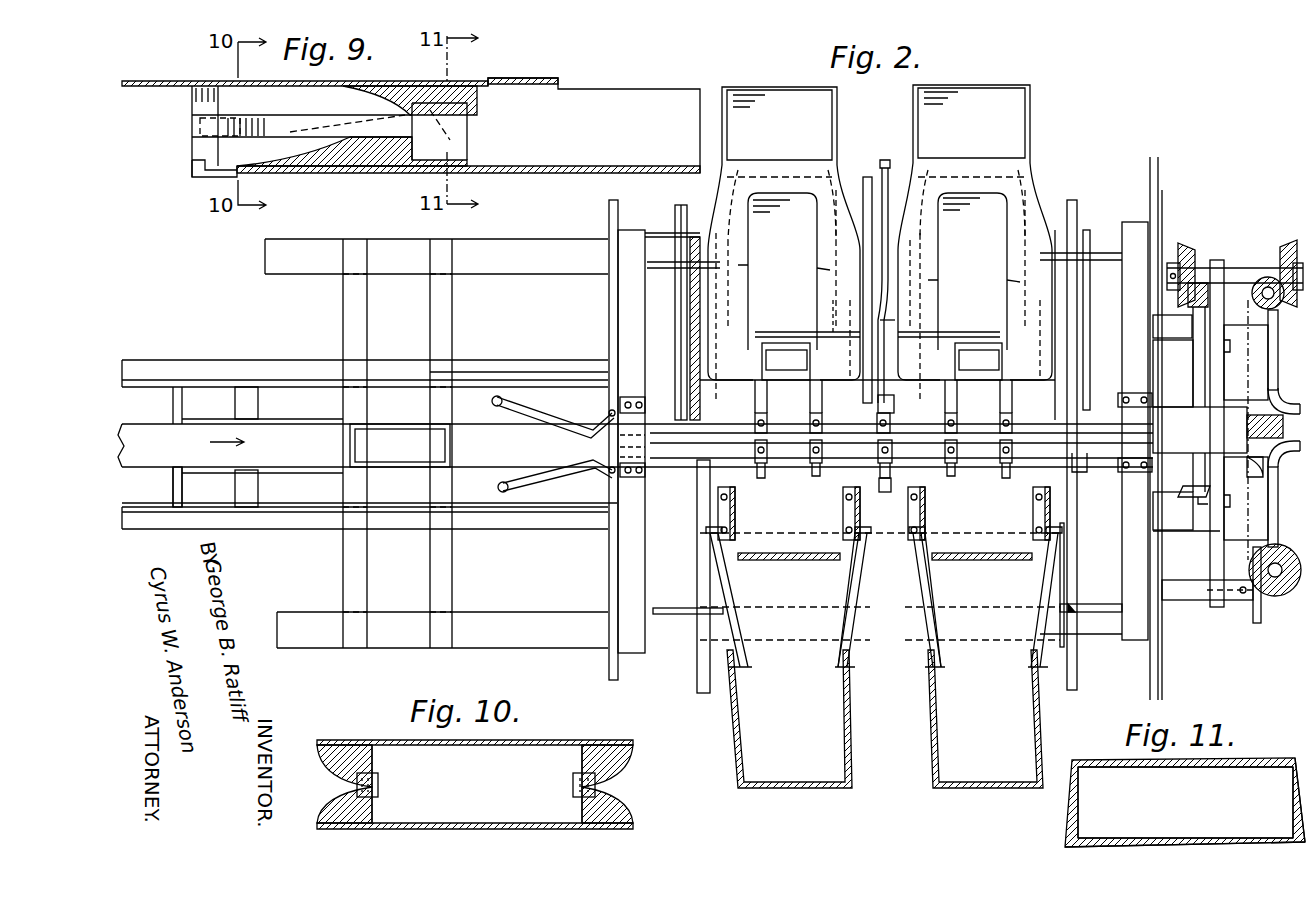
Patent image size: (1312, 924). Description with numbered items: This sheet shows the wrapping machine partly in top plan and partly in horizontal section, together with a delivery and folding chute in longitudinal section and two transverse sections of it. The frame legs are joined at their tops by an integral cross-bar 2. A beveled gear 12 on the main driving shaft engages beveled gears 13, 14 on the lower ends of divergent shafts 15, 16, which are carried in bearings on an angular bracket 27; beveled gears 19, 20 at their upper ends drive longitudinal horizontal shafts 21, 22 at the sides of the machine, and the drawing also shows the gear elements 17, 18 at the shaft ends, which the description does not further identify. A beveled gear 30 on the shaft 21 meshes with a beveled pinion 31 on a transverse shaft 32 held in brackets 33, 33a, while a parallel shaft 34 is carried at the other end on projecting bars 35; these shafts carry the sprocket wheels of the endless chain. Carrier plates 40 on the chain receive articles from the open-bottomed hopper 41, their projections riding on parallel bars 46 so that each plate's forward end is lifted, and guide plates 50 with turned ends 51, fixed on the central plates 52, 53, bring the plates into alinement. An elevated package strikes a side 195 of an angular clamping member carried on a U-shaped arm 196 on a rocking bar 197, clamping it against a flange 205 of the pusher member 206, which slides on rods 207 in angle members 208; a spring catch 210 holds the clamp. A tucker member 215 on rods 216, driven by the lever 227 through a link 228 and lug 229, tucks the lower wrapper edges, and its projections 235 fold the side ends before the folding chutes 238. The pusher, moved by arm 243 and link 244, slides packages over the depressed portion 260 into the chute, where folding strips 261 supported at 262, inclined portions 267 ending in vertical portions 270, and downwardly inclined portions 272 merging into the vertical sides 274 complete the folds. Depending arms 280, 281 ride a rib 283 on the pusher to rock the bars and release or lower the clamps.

In FIG. 2, the cross-bar 2 is at (630, 312).
In FIG. 2, the beveled gear 12 is at (1255, 477).
In FIG. 2, the beveled gear 13 is at (1296, 402).
In FIG. 2, the beveled gear 14 is at (1298, 466).
In FIG. 2, the shaft 15 is at (1279, 340).
In FIG. 2, the shaft 16 is at (1279, 512).
In FIG. 2, the bevel gear 17 is at (1262, 280).
In FIG. 2, the lower bevel gear 18 is at (1285, 598).
In FIG. 2, the beveled gear 19 is at (1288, 240).
In FIG. 2, the beveled gear 20 is at (1258, 615).
In FIG. 2, the horizontal shaft 21 is at (1233, 270).
In FIG. 2, the horizontal shaft 22 is at (1200, 600).
In FIG. 2, the angular bracket 27 is at (1227, 373).
In FIG. 2, the beveled gear 30 is at (1188, 247).
In FIG. 2, the beveled pinion 31 is at (1202, 283).
In FIG. 2, the transverse shaft 32 is at (1195, 397).
In FIG. 2, the bracket 33 is at (1172, 328).
In FIG. 2, the bracket 33a is at (1186, 497).
In FIG. 2, the shaft 34 is at (177, 487).
In FIG. 2, the projecting bars 35 is at (205, 366).
In FIG. 2, the carrier plates 40 is at (145, 430).
In FIG. 2, the hopper 41 is at (548, 239).
In FIG. 2, the parallel bars 46 is at (292, 419).
In FIG. 2, the guide plates 50 is at (565, 423).
In FIG. 2, the turned forward end 51 is at (615, 430).
In FIG. 2, the plate 52 is at (577, 497).
In FIG. 2, the plate 53 is at (580, 380).
In FIG. 2, the side of clamping member 195 is at (882, 361).
In FIG. 2, the U-shaped arm 196 is at (760, 430).
In FIG. 2, the rocking bar 197 is at (1105, 455).
In FIG. 2, the flange 205 is at (835, 345).
In FIG. 2, the pusher member 206 is at (870, 445).
In FIG. 2, the rods 207 is at (680, 400).
In FIG. 2, the angle members 208 is at (657, 233).
In FIG. 2, the spring catch 210 is at (758, 413).
In FIG. 2, the tucker member 215 is at (790, 550).
In FIG. 2, the rods 216 is at (697, 497).
In FIG. 2, the arm or lever 227 is at (866, 180).
In FIG. 2, the link 228 is at (833, 330).
In FIG. 2, the lug or ear 229 is at (878, 405).
In FIG. 2, the projections 235 is at (1087, 404).
In FIG. 9, the folding chutes 238 is at (243, 146).
In FIG. 10, the folding chutes 238 is at (450, 830).
In FIG. 11, the folding chutes 238 is at (1185, 802).
In FIG. 2, the folding chutes 238 is at (835, 278).
In FIG. 2, the arm 243 is at (885, 160).
In FIG. 2, the link 244 is at (887, 317).
In FIG. 9, the depressed portion 260 is at (200, 170).
In FIG. 2, the depressed portion 260 is at (745, 548).
In FIG. 9, the folding strips 261 is at (280, 113).
In FIG. 10, the folding strips 261 is at (379, 785).
In FIG. 2, the folding strips 261 is at (833, 258).
In FIG. 9, the strip support 262 is at (192, 100).
In FIG. 2, the strip support 262 is at (728, 340).
In FIG. 9, the upwardly inclined portions 267 is at (332, 164).
In FIG. 10, the upwardly inclined portions 267 is at (338, 830).
In FIG. 11, the upwardly inclined portions 267 is at (1068, 838).
In FIG. 2, the upwardly inclined portions 267 is at (684, 308).
In FIG. 9, the vertical portions 270 is at (465, 124).
In FIG. 10, the vertical portions 270 is at (374, 809).
In FIG. 11, the vertical portions 270 is at (1080, 818).
In FIG. 2, the vertical portions 270 is at (843, 660).
In FIG. 9, the downwardly inclined portions 272 is at (395, 88).
In FIG. 10, the downwardly inclined portions 272 is at (340, 745).
In FIG. 11, the downwardly inclined portions 272 is at (1290, 780).
In FIG. 2, the downwardly inclined portions 272 is at (830, 243).
In FIG. 9, the vertical sides 274 is at (497, 100).
In FIG. 10, the vertical sides 274 is at (374, 760).
In FIG. 11, the vertical sides 274 is at (1080, 783).
In FIG. 2, the vertical sides 274 is at (1035, 712).
In FIG. 2, the depending arm 280 is at (893, 450).
In FIG. 2, the depending arm 281 is at (892, 472).
In FIG. 2, the rib 283 is at (897, 497).